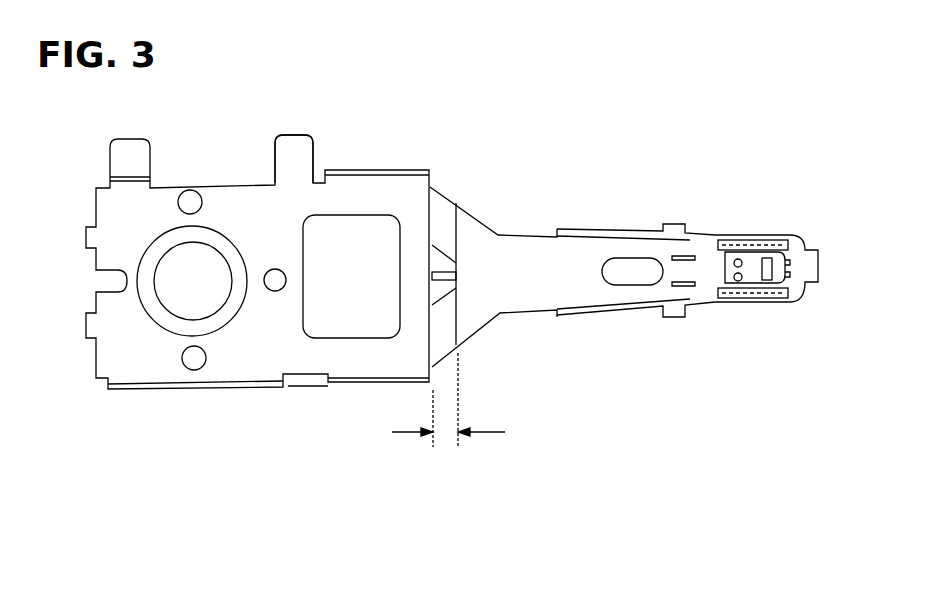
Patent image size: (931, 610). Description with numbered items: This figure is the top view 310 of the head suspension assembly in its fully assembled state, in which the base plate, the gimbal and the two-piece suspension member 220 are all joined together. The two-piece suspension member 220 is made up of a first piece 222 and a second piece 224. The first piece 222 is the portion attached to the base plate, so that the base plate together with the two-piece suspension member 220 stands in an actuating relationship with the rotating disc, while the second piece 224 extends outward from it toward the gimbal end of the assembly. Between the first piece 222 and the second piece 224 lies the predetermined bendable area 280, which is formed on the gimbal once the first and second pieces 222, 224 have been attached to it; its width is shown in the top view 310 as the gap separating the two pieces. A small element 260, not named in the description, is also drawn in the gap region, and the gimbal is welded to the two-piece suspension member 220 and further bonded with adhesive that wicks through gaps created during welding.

The top view 310 is at (198, 402).
The first piece 222 is at (295, 135).
The two-piece suspension member 220 is at (472, 217).
The small tab 260 is at (447, 277).
The predetermined bendable area 280 is at (447, 448).
The second piece 224 is at (606, 312).